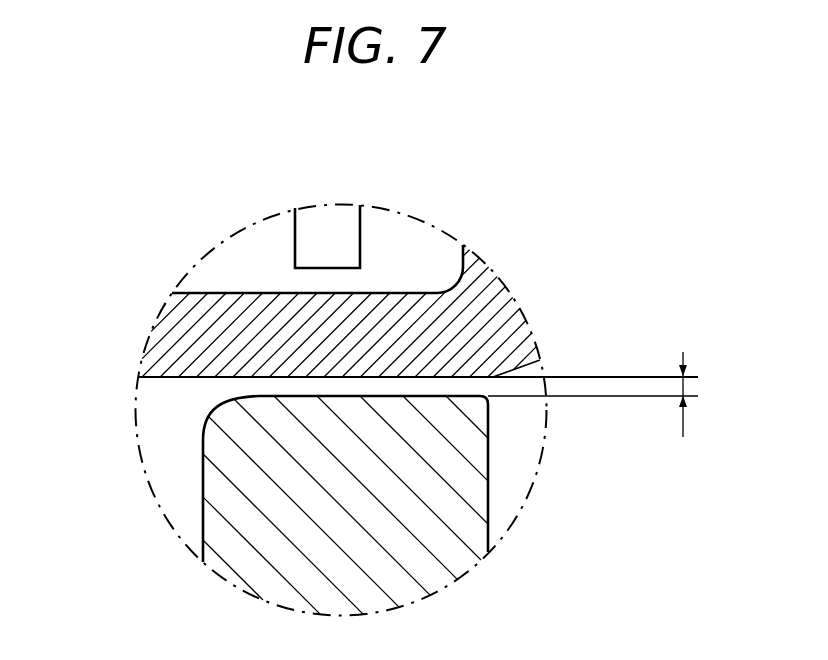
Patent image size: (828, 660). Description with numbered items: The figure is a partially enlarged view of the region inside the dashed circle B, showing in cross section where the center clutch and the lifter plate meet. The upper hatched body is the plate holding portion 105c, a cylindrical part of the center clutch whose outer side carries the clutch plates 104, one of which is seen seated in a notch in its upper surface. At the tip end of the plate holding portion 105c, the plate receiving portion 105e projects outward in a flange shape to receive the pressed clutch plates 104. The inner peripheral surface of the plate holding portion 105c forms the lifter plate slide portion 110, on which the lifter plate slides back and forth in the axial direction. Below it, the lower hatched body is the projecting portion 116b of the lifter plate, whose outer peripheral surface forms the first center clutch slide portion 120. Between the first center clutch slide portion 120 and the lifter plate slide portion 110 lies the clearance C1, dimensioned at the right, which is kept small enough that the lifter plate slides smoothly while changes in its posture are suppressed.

The clutch plates 104 is at (295, 237).
The plate holding portion 105c is at (207, 292).
The plate receiving portion 105e is at (463, 247).
The lifter plate slide portion 110 is at (420, 377).
The projecting portion 116b is at (489, 495).
The first center clutch slide portion 120 is at (288, 395).
The dashed circle B is at (490, 262).
The clearance C1 is at (700, 394).